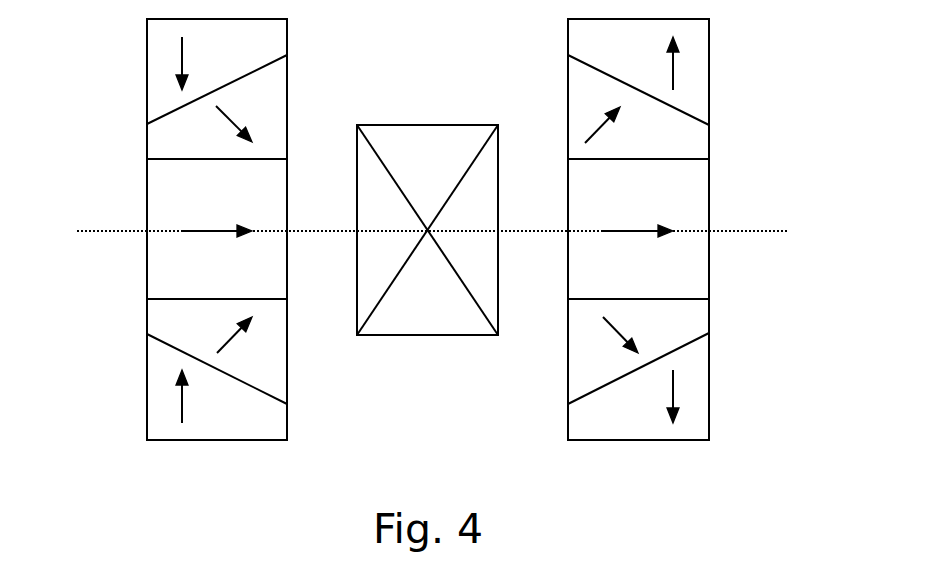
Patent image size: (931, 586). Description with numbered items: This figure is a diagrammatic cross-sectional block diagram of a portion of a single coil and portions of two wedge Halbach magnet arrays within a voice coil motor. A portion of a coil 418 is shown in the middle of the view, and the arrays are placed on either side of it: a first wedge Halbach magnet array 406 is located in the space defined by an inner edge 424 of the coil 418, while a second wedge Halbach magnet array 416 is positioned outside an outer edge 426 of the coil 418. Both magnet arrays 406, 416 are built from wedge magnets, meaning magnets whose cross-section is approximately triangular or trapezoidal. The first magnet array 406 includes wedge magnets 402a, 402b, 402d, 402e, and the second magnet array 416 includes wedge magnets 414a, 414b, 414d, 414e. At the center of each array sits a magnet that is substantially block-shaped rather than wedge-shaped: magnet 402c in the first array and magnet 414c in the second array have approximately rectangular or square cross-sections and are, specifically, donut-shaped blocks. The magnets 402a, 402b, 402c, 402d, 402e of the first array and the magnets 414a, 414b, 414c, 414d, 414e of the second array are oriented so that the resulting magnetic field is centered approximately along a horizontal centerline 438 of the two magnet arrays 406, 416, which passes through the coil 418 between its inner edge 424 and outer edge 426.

The wedge magnet 402a is at (258, 68).
The wedge magnet 402b is at (259, 117).
The block-shaped magnet 402c is at (177, 262).
The wedge magnet 402d is at (259, 360).
The wedge magnet 402e is at (273, 396).
The first wedge Halbach magnet array 406 is at (219, 260).
The wedge magnet 414a is at (679, 77).
The wedge magnet 414b is at (679, 133).
The block-shaped magnet 414c is at (678, 262).
The wedge magnet 414d is at (679, 352).
The wedge magnet 414e is at (728, 386).
The second wedge Halbach magnet array 416 is at (679, 260).
The coil 418 is at (433, 200).
The inner edge of coil 424 is at (357, 200).
The outer edge of coil 426 is at (529, 230).
The horizontal centerline 438 is at (412, 209).